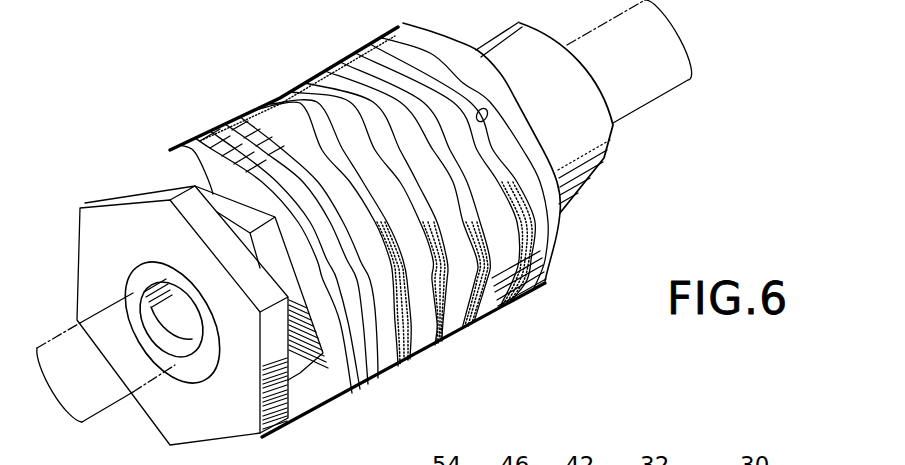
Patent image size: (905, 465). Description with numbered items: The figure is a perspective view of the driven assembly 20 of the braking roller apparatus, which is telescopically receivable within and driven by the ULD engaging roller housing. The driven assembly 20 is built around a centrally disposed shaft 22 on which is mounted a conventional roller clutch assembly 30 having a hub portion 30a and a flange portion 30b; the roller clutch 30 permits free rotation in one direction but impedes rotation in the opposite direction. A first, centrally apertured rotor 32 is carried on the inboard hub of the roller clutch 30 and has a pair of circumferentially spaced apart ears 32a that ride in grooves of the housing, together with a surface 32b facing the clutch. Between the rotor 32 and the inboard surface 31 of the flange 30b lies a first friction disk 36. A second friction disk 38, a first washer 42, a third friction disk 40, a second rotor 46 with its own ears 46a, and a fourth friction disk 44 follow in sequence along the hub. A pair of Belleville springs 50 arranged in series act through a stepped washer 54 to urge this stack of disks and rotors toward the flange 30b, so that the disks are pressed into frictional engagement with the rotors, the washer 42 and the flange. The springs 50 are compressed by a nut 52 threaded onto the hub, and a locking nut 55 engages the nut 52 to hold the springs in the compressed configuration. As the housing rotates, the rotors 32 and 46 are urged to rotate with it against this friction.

The driven assembly 20 is at (389, 232).
The shaft 22 is at (688, 56).
The roller clutch assembly 30 is at (568, 218).
The hub portion 30a is at (612, 150).
The flange portion 30b is at (565, 255).
The inboard surface 31 is at (487, 108).
The first rotor 32 is at (363, 58).
The ears 32a is at (532, 284).
The surface 32b is at (207, 375).
The first friction disk 36 is at (428, 68).
The second friction disk 38 is at (482, 305).
The third friction disk 40 is at (300, 85).
The first washer 42 is at (327, 66).
The fourth friction disk 44 is at (390, 347).
The second rotor 46 is at (265, 95).
The ears 46a is at (428, 307).
The Belleville springs 50 is at (355, 392).
The nut 52 is at (163, 176).
The stepped washer 54 is at (252, 128).
The locking nut 55 is at (105, 197).